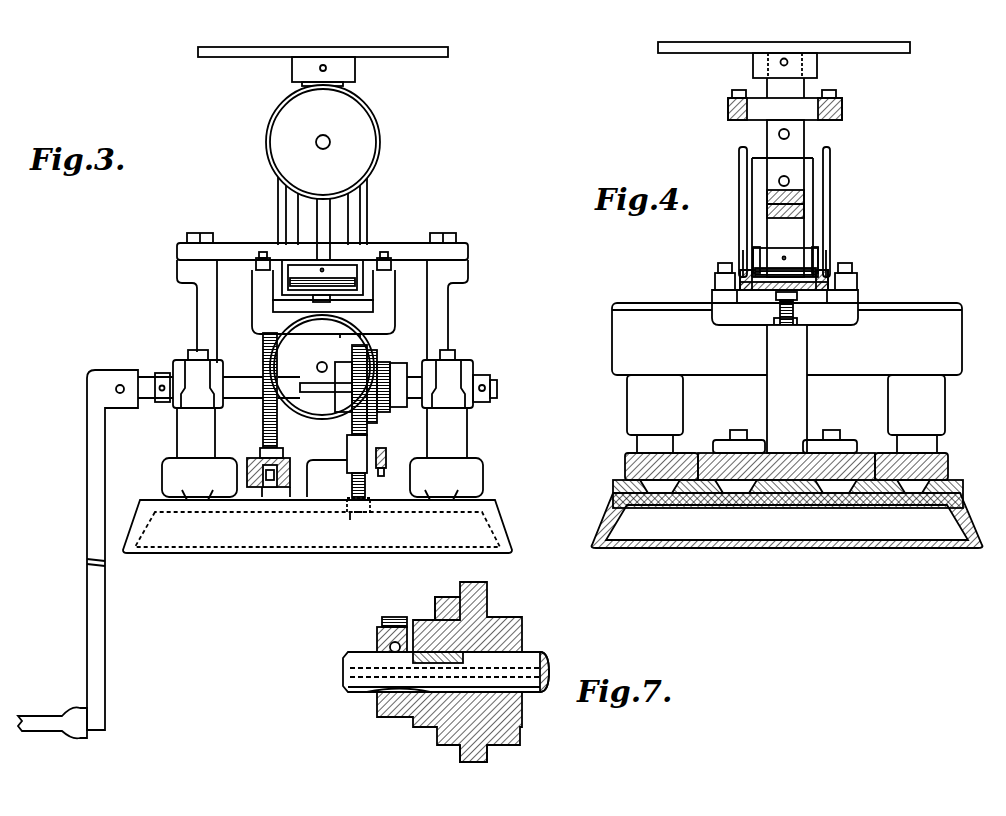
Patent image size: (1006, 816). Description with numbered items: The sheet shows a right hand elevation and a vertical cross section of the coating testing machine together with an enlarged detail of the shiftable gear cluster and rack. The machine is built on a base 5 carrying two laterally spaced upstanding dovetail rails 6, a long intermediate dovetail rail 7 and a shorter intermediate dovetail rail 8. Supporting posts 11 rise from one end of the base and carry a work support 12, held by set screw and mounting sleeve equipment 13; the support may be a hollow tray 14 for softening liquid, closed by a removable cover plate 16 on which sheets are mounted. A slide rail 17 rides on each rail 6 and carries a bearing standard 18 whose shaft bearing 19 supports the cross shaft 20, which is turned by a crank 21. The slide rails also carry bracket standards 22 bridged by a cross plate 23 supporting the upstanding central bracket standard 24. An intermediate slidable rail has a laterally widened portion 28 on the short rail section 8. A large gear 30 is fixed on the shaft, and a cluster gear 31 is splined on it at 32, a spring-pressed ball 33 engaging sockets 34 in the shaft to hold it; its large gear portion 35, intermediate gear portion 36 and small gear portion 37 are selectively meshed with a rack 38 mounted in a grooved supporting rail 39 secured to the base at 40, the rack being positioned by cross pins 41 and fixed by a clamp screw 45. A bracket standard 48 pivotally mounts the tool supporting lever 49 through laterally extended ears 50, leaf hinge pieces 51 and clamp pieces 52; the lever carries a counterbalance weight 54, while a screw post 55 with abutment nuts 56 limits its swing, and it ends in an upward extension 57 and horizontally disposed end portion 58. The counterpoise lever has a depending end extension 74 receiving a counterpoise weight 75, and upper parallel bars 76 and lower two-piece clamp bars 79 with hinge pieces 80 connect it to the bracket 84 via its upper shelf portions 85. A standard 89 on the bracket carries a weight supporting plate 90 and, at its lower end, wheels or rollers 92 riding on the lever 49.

In FIG. 3, the base 5 is at (317, 526).
In FIG. 4, the base 5 is at (852, 500).
In FIG. 3, the upstanding dovetail rails 6 is at (185, 490).
In FIG. 4, the upstanding dovetail rails 6 is at (660, 495).
In FIG. 3, the long intermediate dovetail rail 7 is at (262, 492).
In FIG. 4, the long intermediate dovetail rail 7 is at (735, 495).
In FIG. 4, the shorter intermediate dovetail rail 8 is at (835, 495).
In FIG. 4, the supporting posts 11 is at (640, 446).
In FIG. 4, the work support 12 is at (605, 347).
In FIG. 4, the set screw and mounting sleeve equipment 13 is at (635, 404).
In FIG. 4, the hollow tray 14 is at (935, 310).
In FIG. 4, the removable cover plate 16 is at (645, 303).
In FIG. 3, the slide rail 17 is at (170, 470).
In FIG. 4, the slide rail 17 is at (632, 462).
In FIG. 3, the bearing standard 18 is at (180, 434).
In FIG. 3, the shaft bearing 19 is at (185, 362).
In FIG. 3, the cross shaft 20 is at (150, 380).
In FIG. 7, the cross shaft 20 is at (530, 655).
In FIG. 3, the crank 21 is at (297, 488).
In FIG. 3, the bracket standards 22 is at (197, 300).
In FIG. 3, the cross plate 23 is at (410, 243).
In FIG. 3, the central bracket standard 24 is at (340, 205).
In FIG. 3, the laterally widened portion 28 is at (316, 460).
In FIG. 4, the laterally widened portion 28 is at (815, 440).
In FIG. 3, the large gear 30 is at (262, 425).
In FIG. 3, the cluster gear 31 is at (341, 357).
In FIG. 7, the cluster gear 31 is at (496, 612).
In FIG. 3, the spline 32 is at (310, 383).
In FIG. 7, the spline 32 is at (367, 694).
In FIG. 7, the spring-pressed ball 33 is at (378, 645).
In FIG. 7, the selective sockets 34 is at (435, 665).
In FIG. 3, the large gear portion 35 is at (340, 470).
In FIG. 7, the large gear portion 35 is at (462, 760).
In FIG. 3, the intermediate gear portion 36 is at (378, 428).
In FIG. 7, the intermediate gear portion 36 is at (440, 598).
In FIG. 3, the small gear portion 37 is at (386, 407).
In FIG. 7, the small gear portion 37 is at (392, 618).
In FIG. 3, the rack 38 is at (358, 492).
In FIG. 3, the grooved supporting rail 39 is at (348, 490).
In FIG. 3, the rail securing 40 is at (350, 512).
In FIG. 3, the cross pins 41 is at (262, 452).
In FIG. 3, the clamp screw 45 is at (381, 470).
In FIG. 4, the bracket standard 48 is at (770, 395).
In FIG. 3, the tool supporting lever 49 is at (275, 213).
In FIG. 4, the tool supporting lever 49 is at (837, 261).
In FIG. 3, the laterally extended ears 50 is at (262, 330).
In FIG. 4, the laterally extended ears 50 is at (715, 310).
In FIG. 3, the leaf hinge pieces 51 is at (275, 305).
In FIG. 4, the leaf hinge pieces 51 is at (715, 285).
In FIG. 3, the clamp pieces 52 is at (262, 262).
In FIG. 4, the clamp pieces 52 is at (716, 270).
In FIG. 3, the counterbalance weight 54 is at (355, 336).
In FIG. 4, the screw post 55 is at (796, 322).
In FIG. 4, the abutment nuts 56 is at (778, 300).
In FIG. 4, the upward extension 57 is at (815, 178).
In FIG. 4, the horizontally disposed end portion 58 is at (832, 152).
In FIG. 3, the depending end extension 74 is at (330, 140).
In FIG. 3, the counterpoise weight 75 is at (362, 153).
In FIG. 4, the upper parallel bar 76 is at (726, 105).
In FIG. 4, the lower two-piece clamp bars 79 is at (772, 184).
In FIG. 4, the hinge pieces 80 is at (767, 204).
In FIG. 4, the bracket 84 is at (770, 144).
In FIG. 4, the upper shelf portions 85 is at (740, 120).
In FIG. 3, the standard 89 is at (355, 70).
In FIG. 4, the standard 89 is at (765, 78).
In FIG. 3, the weight supporting plate 90 is at (401, 47).
In FIG. 4, the weight supporting plate 90 is at (720, 42).
In FIG. 3, the wheels or rollers 92 is at (330, 268).
In FIG. 4, the wheels or rollers 92 is at (760, 262).